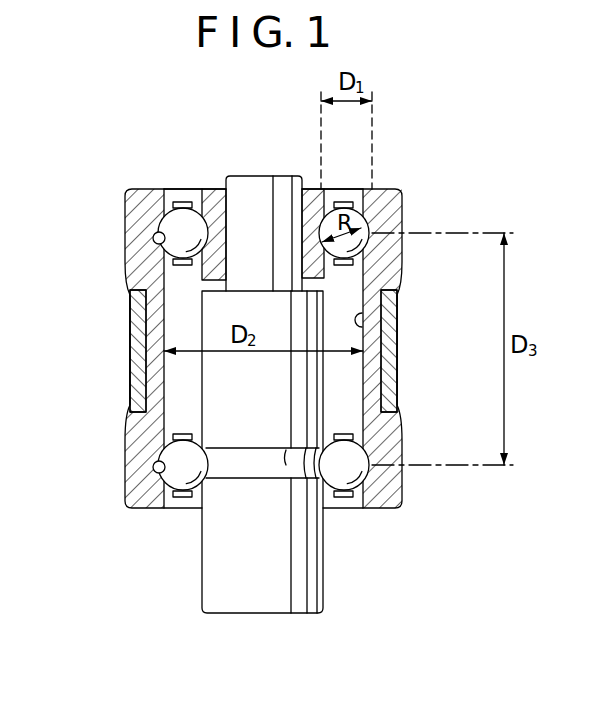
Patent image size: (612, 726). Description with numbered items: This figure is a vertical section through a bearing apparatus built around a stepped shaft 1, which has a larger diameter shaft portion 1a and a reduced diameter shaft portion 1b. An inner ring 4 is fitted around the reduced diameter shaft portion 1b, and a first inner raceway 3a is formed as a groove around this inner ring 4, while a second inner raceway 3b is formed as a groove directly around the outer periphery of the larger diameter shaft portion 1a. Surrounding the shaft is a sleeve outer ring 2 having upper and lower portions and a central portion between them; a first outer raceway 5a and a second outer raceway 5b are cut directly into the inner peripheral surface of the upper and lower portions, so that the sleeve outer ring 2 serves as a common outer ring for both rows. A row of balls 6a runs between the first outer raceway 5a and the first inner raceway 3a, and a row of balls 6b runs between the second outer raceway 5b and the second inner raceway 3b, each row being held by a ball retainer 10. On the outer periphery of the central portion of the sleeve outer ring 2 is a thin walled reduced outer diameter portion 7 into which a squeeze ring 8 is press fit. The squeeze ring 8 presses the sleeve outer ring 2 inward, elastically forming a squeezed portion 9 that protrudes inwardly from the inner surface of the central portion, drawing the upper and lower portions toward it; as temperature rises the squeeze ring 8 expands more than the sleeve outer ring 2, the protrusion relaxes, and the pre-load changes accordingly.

The stepped shaft 1 is at (262, 400).
The larger diameter shaft portion 1a is at (273, 602).
The reduced diameter shaft portion 1b is at (248, 197).
The sleeve outer ring 2 is at (393, 212).
The first inner raceway 3a is at (195, 190).
The second inner raceway 3b is at (248, 468).
The inner ring 4 is at (218, 189).
The first outer raceway 5a is at (153, 240).
The second outer raceway 5b is at (153, 470).
The balls for the first row 6a is at (166, 191).
The balls for the second row 6b is at (163, 452).
The reduced outer diameter portion 7 is at (393, 333).
The squeeze ring 8 is at (390, 382).
The squeezed portion 9 is at (357, 318).
The ball retainer 10 is at (348, 203).